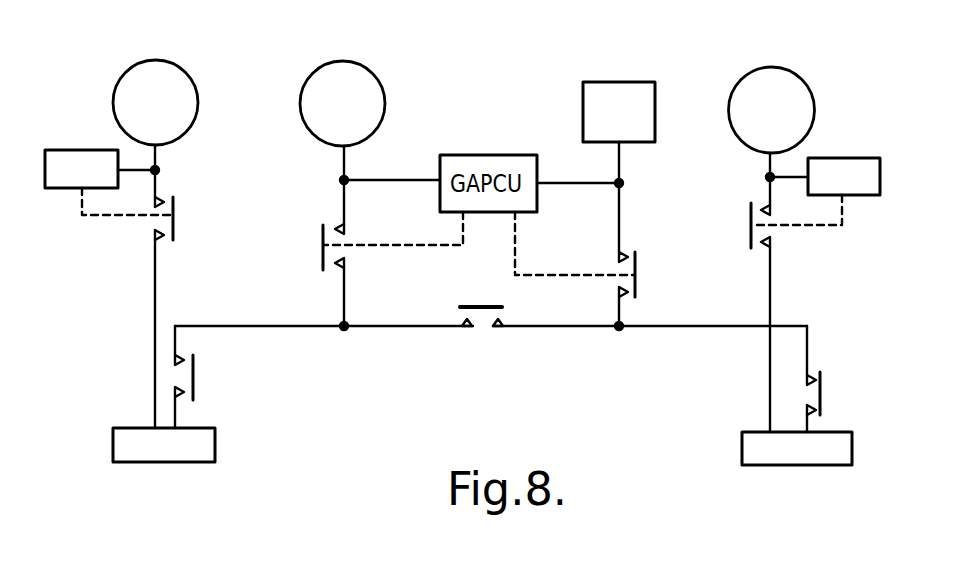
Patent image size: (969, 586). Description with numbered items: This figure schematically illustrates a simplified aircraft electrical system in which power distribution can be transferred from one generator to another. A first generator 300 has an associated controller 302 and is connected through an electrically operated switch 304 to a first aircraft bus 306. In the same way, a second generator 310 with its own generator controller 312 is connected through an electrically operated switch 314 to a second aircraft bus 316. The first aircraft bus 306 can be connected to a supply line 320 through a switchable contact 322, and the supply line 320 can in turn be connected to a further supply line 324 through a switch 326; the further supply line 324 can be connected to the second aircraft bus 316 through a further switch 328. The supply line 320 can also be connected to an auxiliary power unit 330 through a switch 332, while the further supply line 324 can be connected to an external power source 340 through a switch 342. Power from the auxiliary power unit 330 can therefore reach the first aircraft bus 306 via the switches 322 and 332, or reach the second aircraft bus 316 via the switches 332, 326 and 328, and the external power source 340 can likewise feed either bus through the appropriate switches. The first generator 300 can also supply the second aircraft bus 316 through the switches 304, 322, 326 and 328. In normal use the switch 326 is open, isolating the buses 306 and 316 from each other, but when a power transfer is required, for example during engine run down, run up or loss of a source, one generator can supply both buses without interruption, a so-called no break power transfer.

The first generator 300 is at (163, 61).
The controller 302 is at (65, 190).
The electrically operated switch 304 is at (178, 216).
The first aircraft bus 306 is at (152, 463).
The second generator 310 is at (800, 75).
The generator controller 312 is at (868, 197).
The electrically operated switch 314 is at (748, 250).
The second aircraft bus 316 is at (783, 467).
The supply line 320 is at (383, 330).
The switchable contact 322 is at (197, 398).
The further supply line 324 is at (600, 330).
The switch 326 is at (483, 332).
The further switch 328 is at (822, 400).
The auxiliary power unit 330 is at (366, 68).
The switch 332 is at (322, 268).
The external power source 340 is at (626, 82).
The switch 342 is at (637, 255).